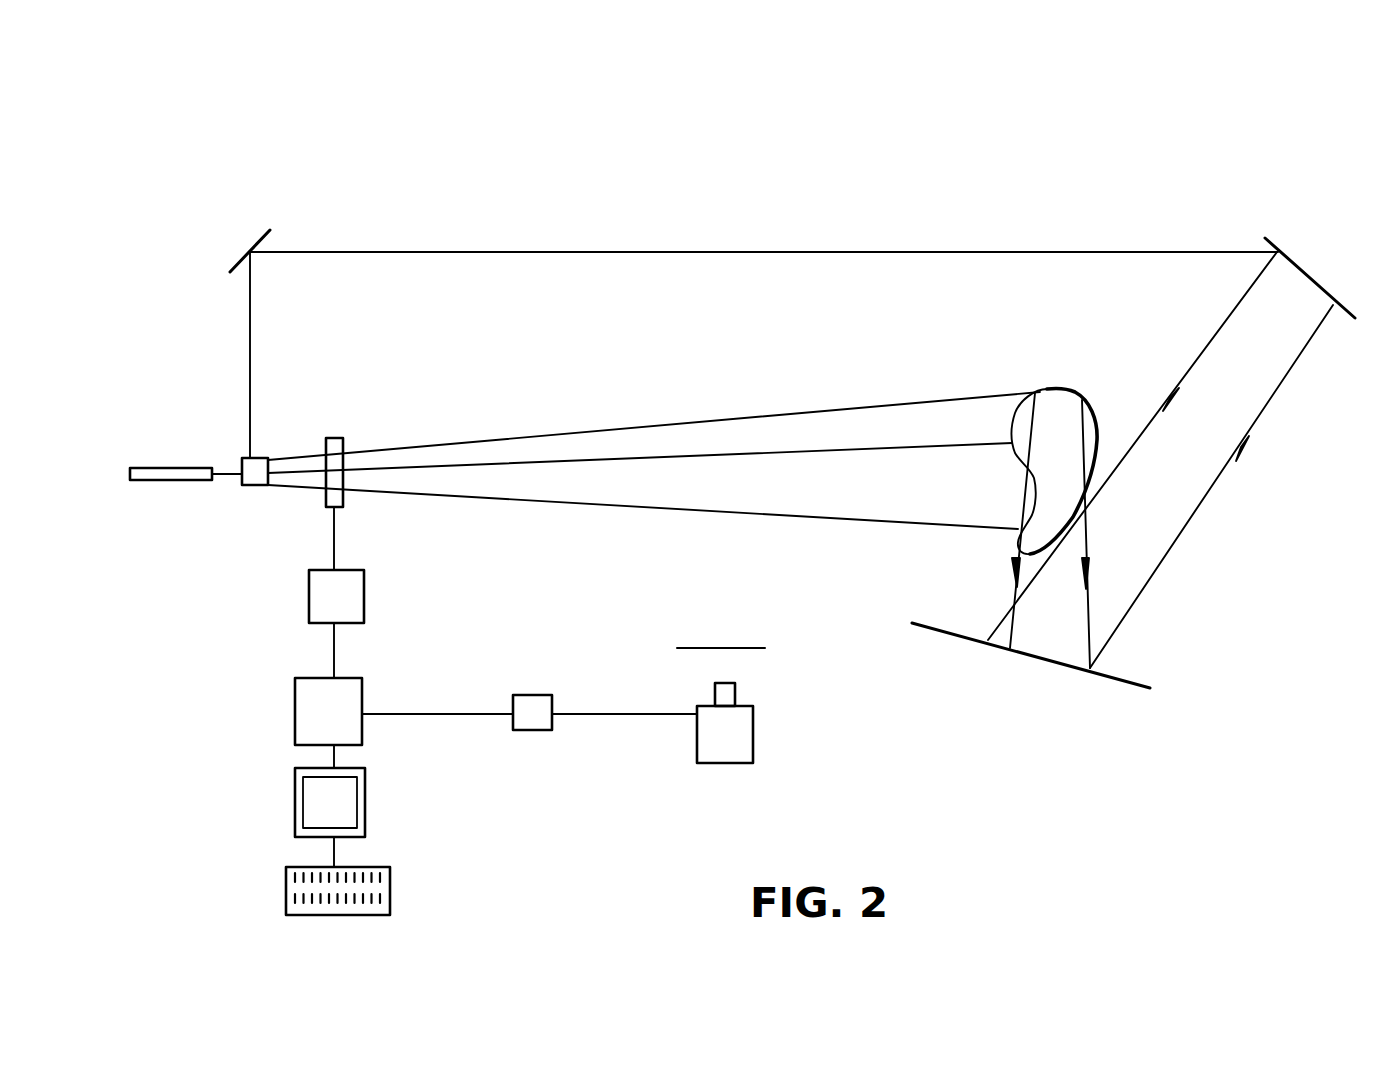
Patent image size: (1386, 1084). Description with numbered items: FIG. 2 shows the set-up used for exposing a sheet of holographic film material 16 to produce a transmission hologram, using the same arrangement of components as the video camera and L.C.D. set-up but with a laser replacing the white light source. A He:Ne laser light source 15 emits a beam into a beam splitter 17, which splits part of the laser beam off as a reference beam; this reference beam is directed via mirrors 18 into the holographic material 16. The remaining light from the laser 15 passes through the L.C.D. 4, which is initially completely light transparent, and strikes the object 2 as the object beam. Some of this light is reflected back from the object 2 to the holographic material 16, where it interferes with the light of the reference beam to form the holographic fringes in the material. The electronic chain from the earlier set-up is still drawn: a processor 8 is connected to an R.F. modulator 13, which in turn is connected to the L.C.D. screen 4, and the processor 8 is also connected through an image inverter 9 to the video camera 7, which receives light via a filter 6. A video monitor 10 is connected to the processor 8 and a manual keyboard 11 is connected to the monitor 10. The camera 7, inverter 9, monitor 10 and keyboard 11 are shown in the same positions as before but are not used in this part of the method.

The object 2 is at (1058, 402).
The L.C.D. 4 is at (340, 442).
The filter 6 is at (677, 648).
The video camera 7 is at (700, 748).
The processor 8 is at (295, 708).
The image inverter 9 is at (515, 705).
The video monitor 10 is at (298, 791).
The manual keyboard 11 is at (289, 885).
The R.F. modulator 13 is at (366, 603).
The He:Ne laser light source 15 is at (166, 468).
The sheet of holographic film material 16 is at (1110, 681).
The beam splitter 17 is at (260, 470).
The mirrors 18 is at (231, 266).